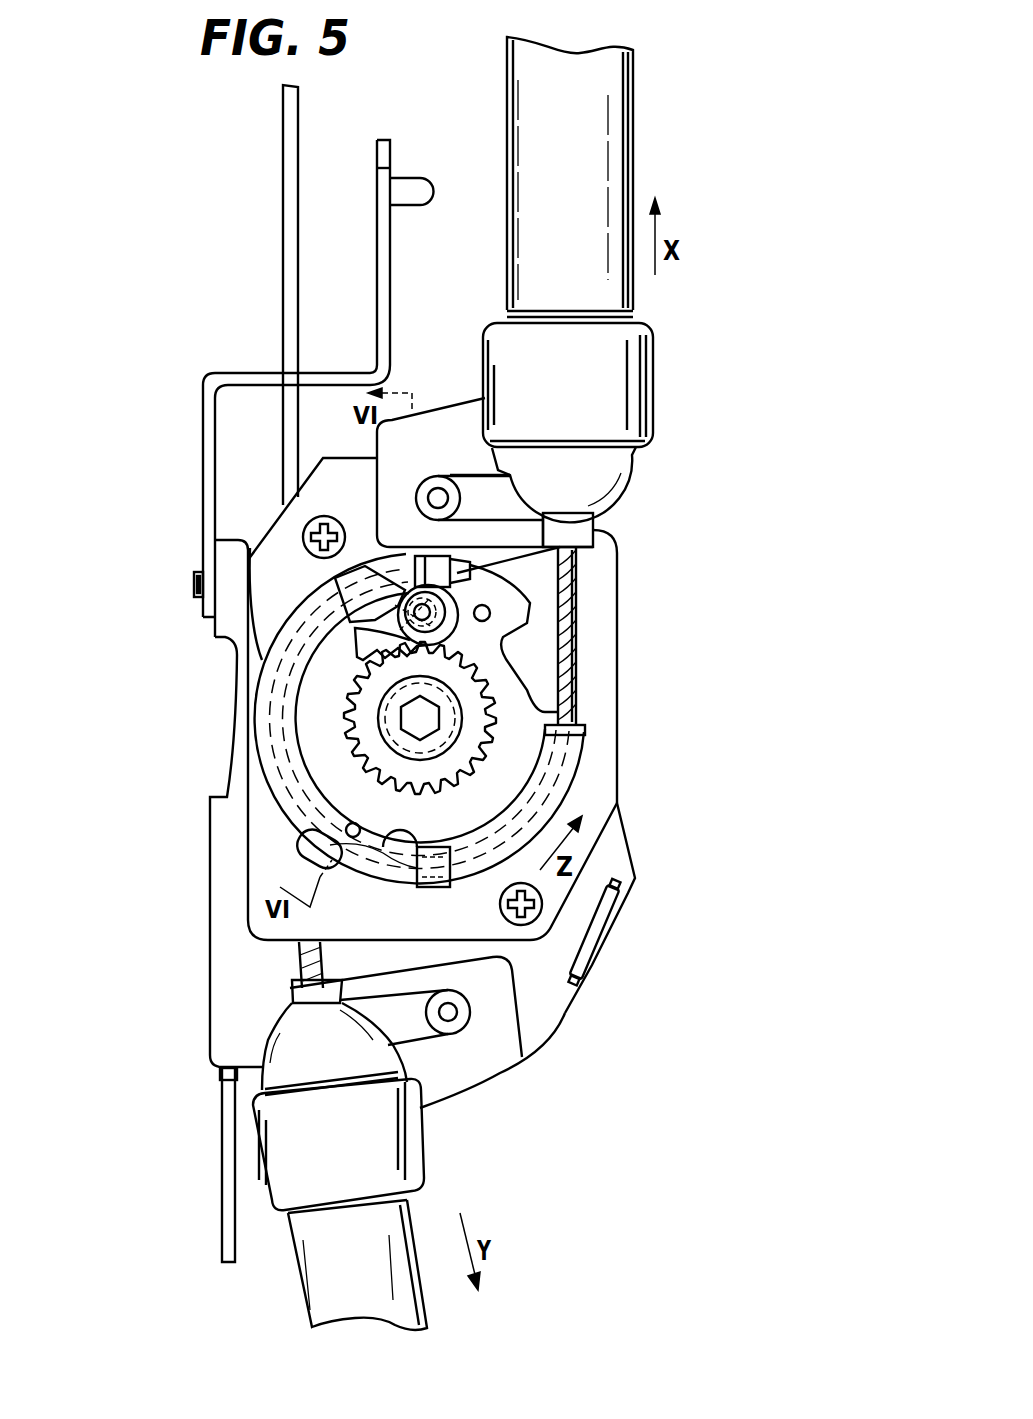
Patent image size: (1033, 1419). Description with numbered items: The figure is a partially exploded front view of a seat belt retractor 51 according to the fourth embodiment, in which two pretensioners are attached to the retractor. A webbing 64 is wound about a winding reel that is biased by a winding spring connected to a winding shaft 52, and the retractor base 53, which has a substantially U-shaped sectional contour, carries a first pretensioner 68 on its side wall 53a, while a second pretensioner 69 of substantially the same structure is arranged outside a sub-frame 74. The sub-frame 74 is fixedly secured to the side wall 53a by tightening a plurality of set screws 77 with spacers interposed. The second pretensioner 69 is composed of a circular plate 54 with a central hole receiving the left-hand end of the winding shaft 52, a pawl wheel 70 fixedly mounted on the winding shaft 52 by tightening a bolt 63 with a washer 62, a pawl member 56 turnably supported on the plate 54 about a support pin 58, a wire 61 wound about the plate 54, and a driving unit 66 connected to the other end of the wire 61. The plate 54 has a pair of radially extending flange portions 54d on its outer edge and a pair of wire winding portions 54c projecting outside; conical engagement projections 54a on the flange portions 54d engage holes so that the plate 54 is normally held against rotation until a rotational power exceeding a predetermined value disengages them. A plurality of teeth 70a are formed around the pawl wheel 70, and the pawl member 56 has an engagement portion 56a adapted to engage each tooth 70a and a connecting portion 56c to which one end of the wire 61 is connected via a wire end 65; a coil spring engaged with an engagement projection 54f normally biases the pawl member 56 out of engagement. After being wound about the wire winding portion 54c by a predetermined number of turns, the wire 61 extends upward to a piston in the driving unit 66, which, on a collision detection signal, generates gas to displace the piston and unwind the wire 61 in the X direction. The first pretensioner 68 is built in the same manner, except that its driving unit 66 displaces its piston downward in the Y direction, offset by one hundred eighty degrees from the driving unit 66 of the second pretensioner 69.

The retractor 51 is at (642, 577).
The winding shaft 52 is at (450, 713).
The retractor base 53 is at (208, 820).
The side wall 53a is at (605, 858).
The plate 54 is at (553, 790).
The conical engagement projection 54a is at (540, 590).
The wire winding portion 54c is at (577, 688).
The flange portion 54d is at (492, 583).
The engagement projection 54f is at (318, 585).
The pawl member 56 is at (350, 638).
The engagement portion 56a is at (355, 652).
The connecting portion 56c is at (423, 557).
The support pin 58 is at (398, 588).
The wire 61 is at (577, 640).
The washer 62 is at (405, 722).
The bolt 63 is at (437, 737).
The webbing 64 is at (288, 272).
The wire end 65 is at (453, 547).
The driving unit 66 is at (620, 390).
The first pretensioner 68 is at (488, 1107).
The second pretensioner 69 is at (678, 453).
The pawl wheel 70 is at (497, 742).
The tooth 70a is at (438, 790).
The sub-frame 74 is at (600, 714).
The set screw 77 is at (323, 514).